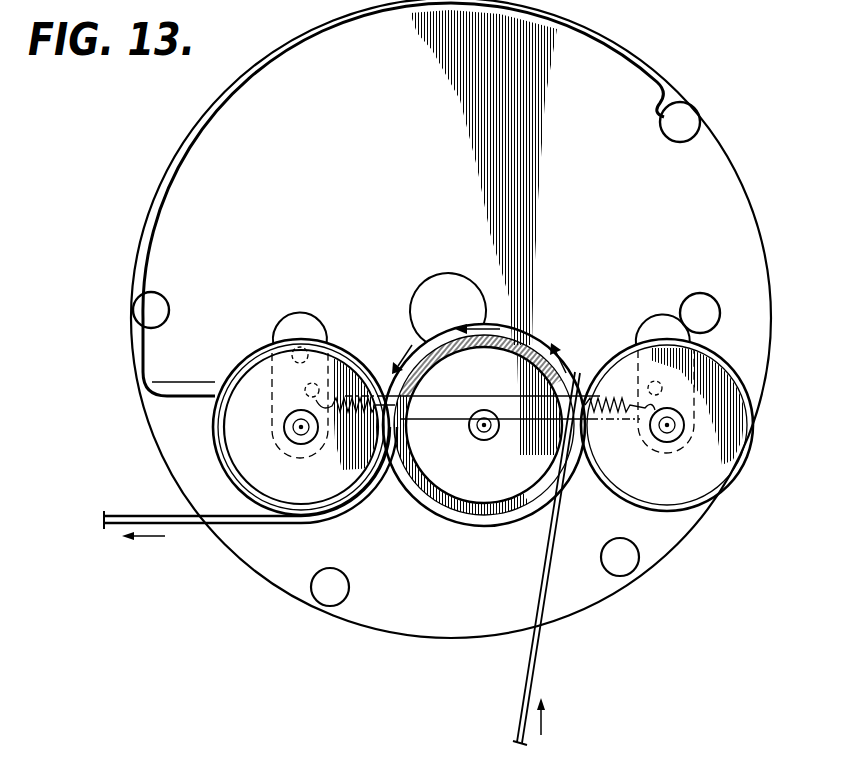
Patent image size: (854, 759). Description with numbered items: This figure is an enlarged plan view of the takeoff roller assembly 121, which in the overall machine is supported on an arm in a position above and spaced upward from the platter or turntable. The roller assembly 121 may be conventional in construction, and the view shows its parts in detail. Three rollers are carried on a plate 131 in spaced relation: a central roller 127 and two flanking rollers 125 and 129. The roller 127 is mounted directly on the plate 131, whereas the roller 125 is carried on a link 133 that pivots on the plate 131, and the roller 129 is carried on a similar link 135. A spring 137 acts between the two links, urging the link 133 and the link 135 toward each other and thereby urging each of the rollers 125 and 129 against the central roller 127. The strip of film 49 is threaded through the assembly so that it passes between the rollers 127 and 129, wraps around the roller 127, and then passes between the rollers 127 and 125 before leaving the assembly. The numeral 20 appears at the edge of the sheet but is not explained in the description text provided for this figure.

The takeoff roller assembly 121 is at (264, 595).
The plate 131 is at (407, 605).
The roller 127 is at (522, 358).
The roller 125 is at (258, 387).
The link 133 is at (318, 322).
The roller 129 is at (713, 405).
The link 135 is at (665, 322).
The spring 137 is at (618, 390).
The strip of film 49 is at (537, 664).
The printer 20 is at (275, 750).